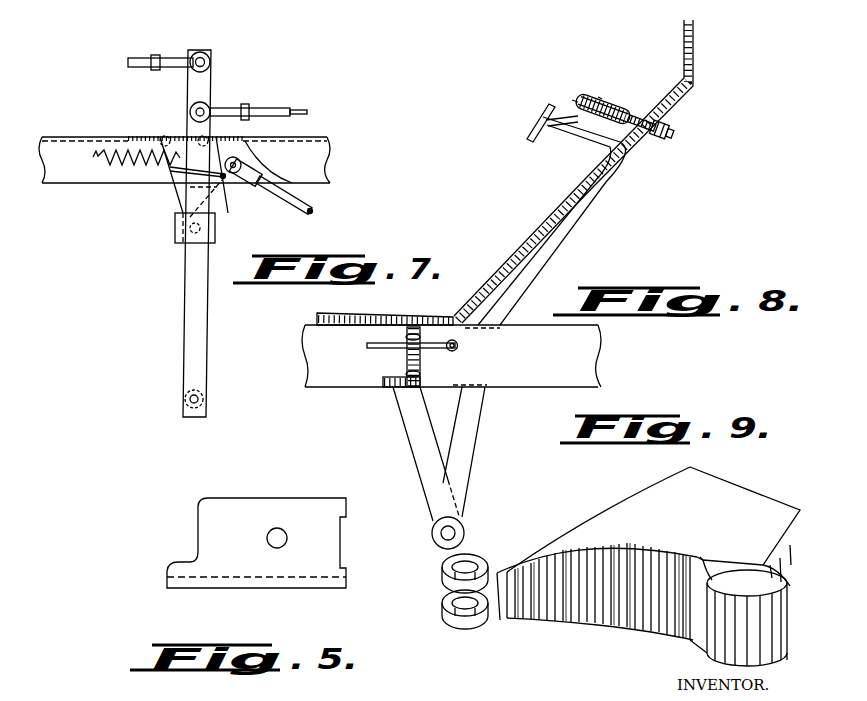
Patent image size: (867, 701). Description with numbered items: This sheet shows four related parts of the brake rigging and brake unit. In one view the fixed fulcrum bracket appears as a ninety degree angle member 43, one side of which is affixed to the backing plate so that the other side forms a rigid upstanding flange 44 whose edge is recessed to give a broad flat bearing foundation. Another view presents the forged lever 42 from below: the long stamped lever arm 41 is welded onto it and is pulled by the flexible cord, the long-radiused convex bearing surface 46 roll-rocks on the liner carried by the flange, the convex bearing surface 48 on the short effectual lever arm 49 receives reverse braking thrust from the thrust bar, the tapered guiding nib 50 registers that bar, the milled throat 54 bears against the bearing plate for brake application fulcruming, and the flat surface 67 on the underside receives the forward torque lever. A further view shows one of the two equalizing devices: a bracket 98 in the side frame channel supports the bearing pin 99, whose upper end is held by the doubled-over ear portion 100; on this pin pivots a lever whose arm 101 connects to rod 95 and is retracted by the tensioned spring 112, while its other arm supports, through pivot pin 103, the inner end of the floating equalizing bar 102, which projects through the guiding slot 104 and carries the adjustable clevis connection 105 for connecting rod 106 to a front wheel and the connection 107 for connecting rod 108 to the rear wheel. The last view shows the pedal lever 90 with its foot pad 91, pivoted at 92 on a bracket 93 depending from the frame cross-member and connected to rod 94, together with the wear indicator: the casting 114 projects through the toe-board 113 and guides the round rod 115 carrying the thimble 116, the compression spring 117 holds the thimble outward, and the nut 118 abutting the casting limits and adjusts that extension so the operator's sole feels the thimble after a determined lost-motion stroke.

In FIG. 9, the long stamped lever arm 41 is at (678, 488).
In FIG. 9, the forged lever 42 is at (597, 514).
In FIG. 5, the 90 degree angle member 43 is at (274, 497).
In FIG. 5, the upstanding flange 44 is at (277, 572).
In FIG. 9, the convexedly cylindrical bearing surface 46 is at (693, 638).
In FIG. 9, the convexedly cylindrical bearing surface 48 is at (770, 569).
In FIG. 9, the short effectual lever arm 49 is at (742, 585).
In FIG. 9, the tapered guiding nib 50 is at (768, 581).
In FIG. 9, the milled throat 54 is at (710, 574).
In FIG. 9, the flat surface 67 is at (503, 618).
In FIG. 8, the pedal lever 90 is at (558, 251).
In FIG. 8, the foot pad 91 is at (536, 124).
In FIG. 8, the pivot 92 is at (456, 535).
In FIG. 8, the bracket 93 is at (424, 445).
In FIG. 8, the connecting rod 94 is at (380, 348).
In FIG. 7, the connecting rod 95 is at (308, 213).
In FIG. 7, the bracket 98 is at (180, 193).
In FIG. 7, the bearing pin 99 is at (217, 227).
In FIG. 7, the ear portion 100 is at (176, 243).
In FIG. 7, the lever arm 101 is at (228, 193).
In FIG. 7, the floating equalizing bar 102 is at (205, 358).
In FIG. 7, the pivot pin 103 is at (184, 401).
In FIG. 7, the guiding slot 104 is at (187, 130).
In FIG. 7, the adjustable clevis connection 105 is at (192, 112).
In FIG. 7, the connecting rod 106 is at (270, 111).
In FIG. 7, the clevis connection 107 is at (211, 56).
In FIG. 7, the connecting rod 108 is at (138, 58).
In FIG. 7, the contractilely tensioned spring 112 is at (140, 170).
In FIG. 8, the toe-board 113 is at (556, 208).
In FIG. 8, the casting 114 is at (637, 108).
In FIG. 8, the round guiding rod 115 is at (577, 101).
In FIG. 8, the thimble 116 is at (586, 96).
In FIG. 8, the compression spring 117 is at (601, 96).
In FIG. 8, the nut 118 is at (670, 126).